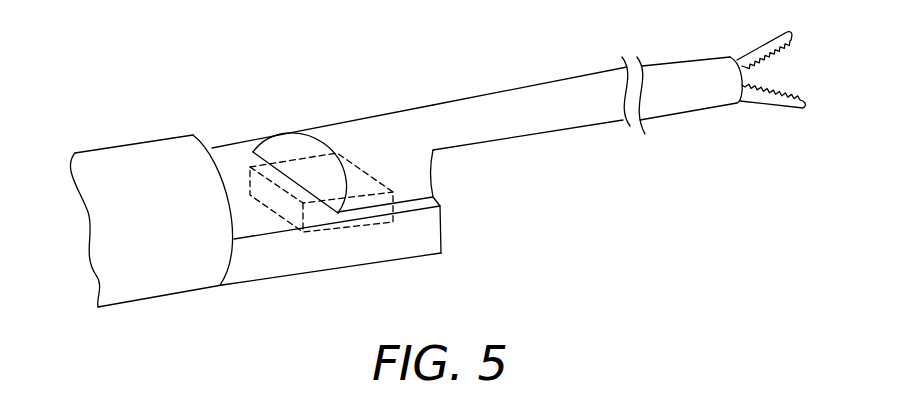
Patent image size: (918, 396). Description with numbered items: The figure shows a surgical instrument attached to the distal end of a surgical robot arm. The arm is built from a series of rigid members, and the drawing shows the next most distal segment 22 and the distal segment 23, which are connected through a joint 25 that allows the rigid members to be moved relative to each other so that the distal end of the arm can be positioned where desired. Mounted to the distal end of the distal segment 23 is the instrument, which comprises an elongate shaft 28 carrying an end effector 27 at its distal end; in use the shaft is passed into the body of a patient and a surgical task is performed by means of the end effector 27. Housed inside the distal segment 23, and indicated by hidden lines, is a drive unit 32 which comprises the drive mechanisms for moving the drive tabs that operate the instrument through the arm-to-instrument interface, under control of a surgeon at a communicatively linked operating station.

The rigid segment of the arm 22 is at (158, 285).
The distal segment of the arm 23 is at (420, 248).
The joint 25 is at (232, 190).
The end effector 27 is at (777, 108).
The elongate shaft 28 is at (535, 95).
The drive unit 32 is at (355, 228).